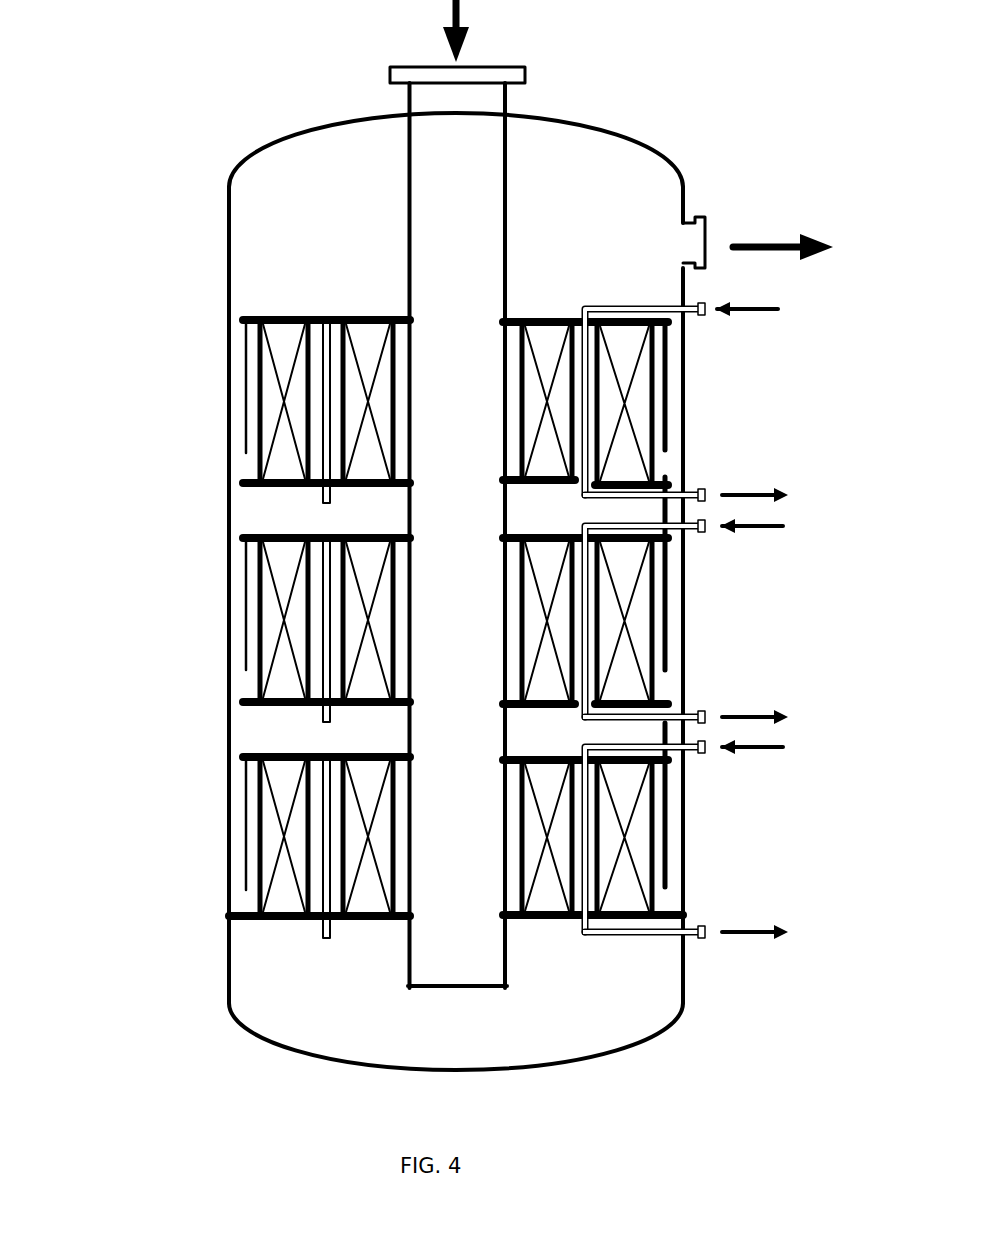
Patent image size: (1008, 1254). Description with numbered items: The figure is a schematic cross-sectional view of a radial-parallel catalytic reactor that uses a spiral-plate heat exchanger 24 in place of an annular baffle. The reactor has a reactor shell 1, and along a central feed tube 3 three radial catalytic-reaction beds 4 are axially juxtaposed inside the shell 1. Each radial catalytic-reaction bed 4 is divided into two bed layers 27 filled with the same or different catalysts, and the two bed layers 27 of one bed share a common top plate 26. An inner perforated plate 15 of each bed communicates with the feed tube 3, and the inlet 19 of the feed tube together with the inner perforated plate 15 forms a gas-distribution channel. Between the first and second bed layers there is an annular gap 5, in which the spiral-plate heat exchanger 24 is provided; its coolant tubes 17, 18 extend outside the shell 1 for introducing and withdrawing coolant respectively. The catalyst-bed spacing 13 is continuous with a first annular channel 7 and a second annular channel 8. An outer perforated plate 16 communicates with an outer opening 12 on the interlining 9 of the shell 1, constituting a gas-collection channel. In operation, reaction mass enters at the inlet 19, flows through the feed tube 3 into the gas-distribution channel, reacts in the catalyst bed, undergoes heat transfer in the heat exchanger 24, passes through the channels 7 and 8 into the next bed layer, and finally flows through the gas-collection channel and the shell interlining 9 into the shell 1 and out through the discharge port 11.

The reactor shell 1 is at (665, 165).
The feed tube 3 is at (408, 242).
The radial catalytic-reaction bed 4 is at (97, 140).
The annular gap 5 is at (90, 755).
The first annular channel 7 is at (333, 698).
The second annular channel 8 is at (318, 665).
The interlining 9 is at (236, 343).
The discharge port 11 is at (707, 235).
The outer opening 12 is at (246, 464).
The catalyst-bed spacing 13 is at (265, 512).
The inner perforated plate 15 is at (523, 403).
The outer perforated plate 16 is at (655, 425).
The coolant tube 17 is at (697, 530).
The coolant tube 18 is at (700, 712).
The inlet 19 is at (407, 898).
The spiral-plate heat exchanger 24 is at (327, 445).
The common top plate 26 is at (260, 317).
The bed layer 27 is at (370, 352).